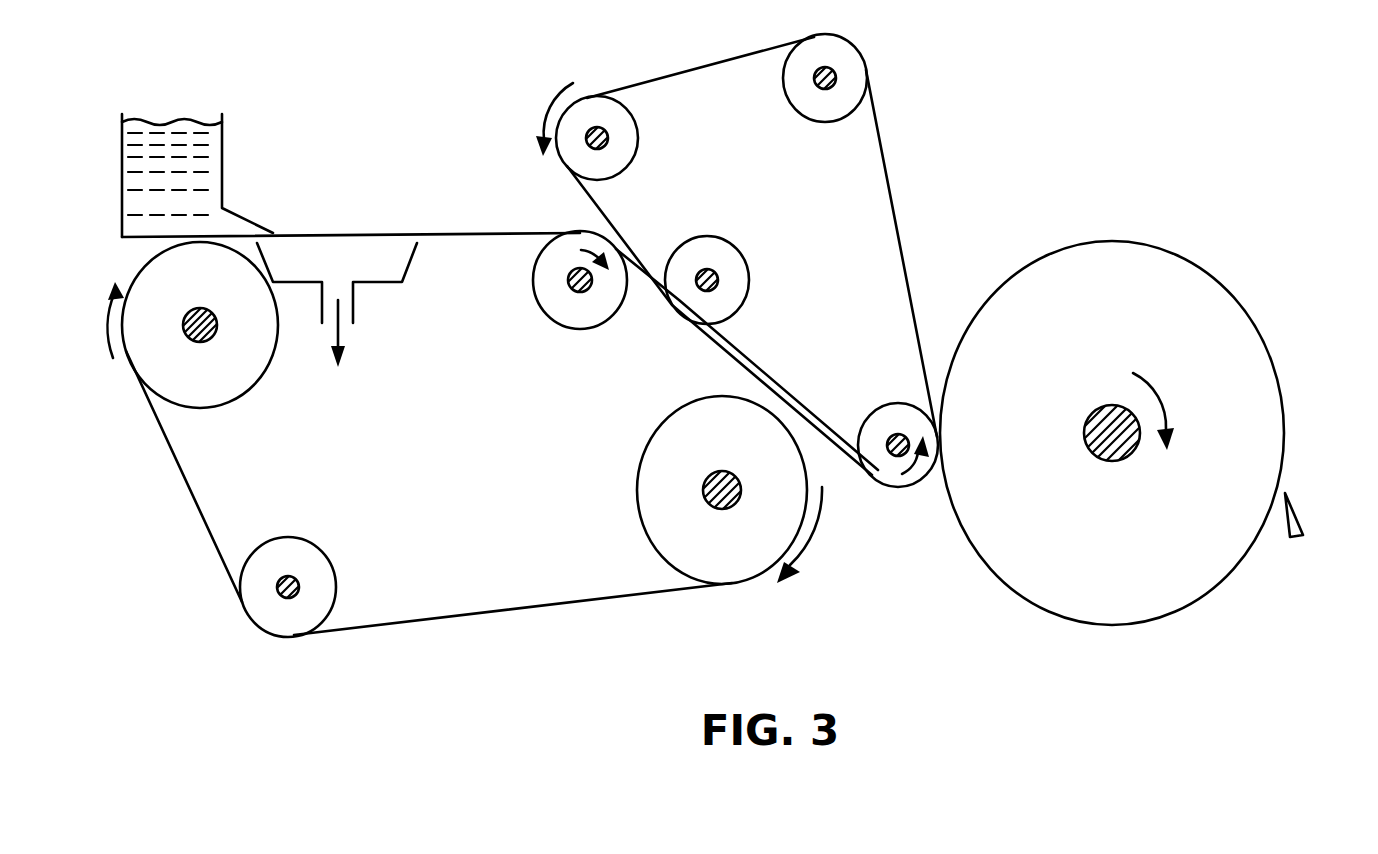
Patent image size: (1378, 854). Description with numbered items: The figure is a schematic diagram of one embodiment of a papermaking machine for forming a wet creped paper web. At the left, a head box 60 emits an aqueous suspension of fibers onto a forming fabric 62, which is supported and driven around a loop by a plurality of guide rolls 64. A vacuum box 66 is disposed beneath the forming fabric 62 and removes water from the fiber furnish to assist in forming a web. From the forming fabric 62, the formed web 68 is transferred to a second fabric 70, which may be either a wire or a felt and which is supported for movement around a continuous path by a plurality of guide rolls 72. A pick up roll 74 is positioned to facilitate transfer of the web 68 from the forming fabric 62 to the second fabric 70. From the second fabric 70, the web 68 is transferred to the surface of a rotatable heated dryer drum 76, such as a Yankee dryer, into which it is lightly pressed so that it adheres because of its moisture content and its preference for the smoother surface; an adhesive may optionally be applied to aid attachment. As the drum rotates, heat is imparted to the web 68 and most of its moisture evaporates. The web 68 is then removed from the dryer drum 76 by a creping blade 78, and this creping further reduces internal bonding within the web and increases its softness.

The head box 60 is at (215, 147).
The forming fabric 62 is at (428, 225).
The guide rolls 64 is at (247, 380).
The vacuum box 66 is at (410, 265).
The formed web 68 is at (512, 228).
The second fabric 70 is at (603, 208).
The guide rolls 72 is at (628, 108).
The pick up roll 74 is at (735, 262).
The heated dryer drum 76 is at (1053, 597).
The creping blade 78 is at (1298, 540).